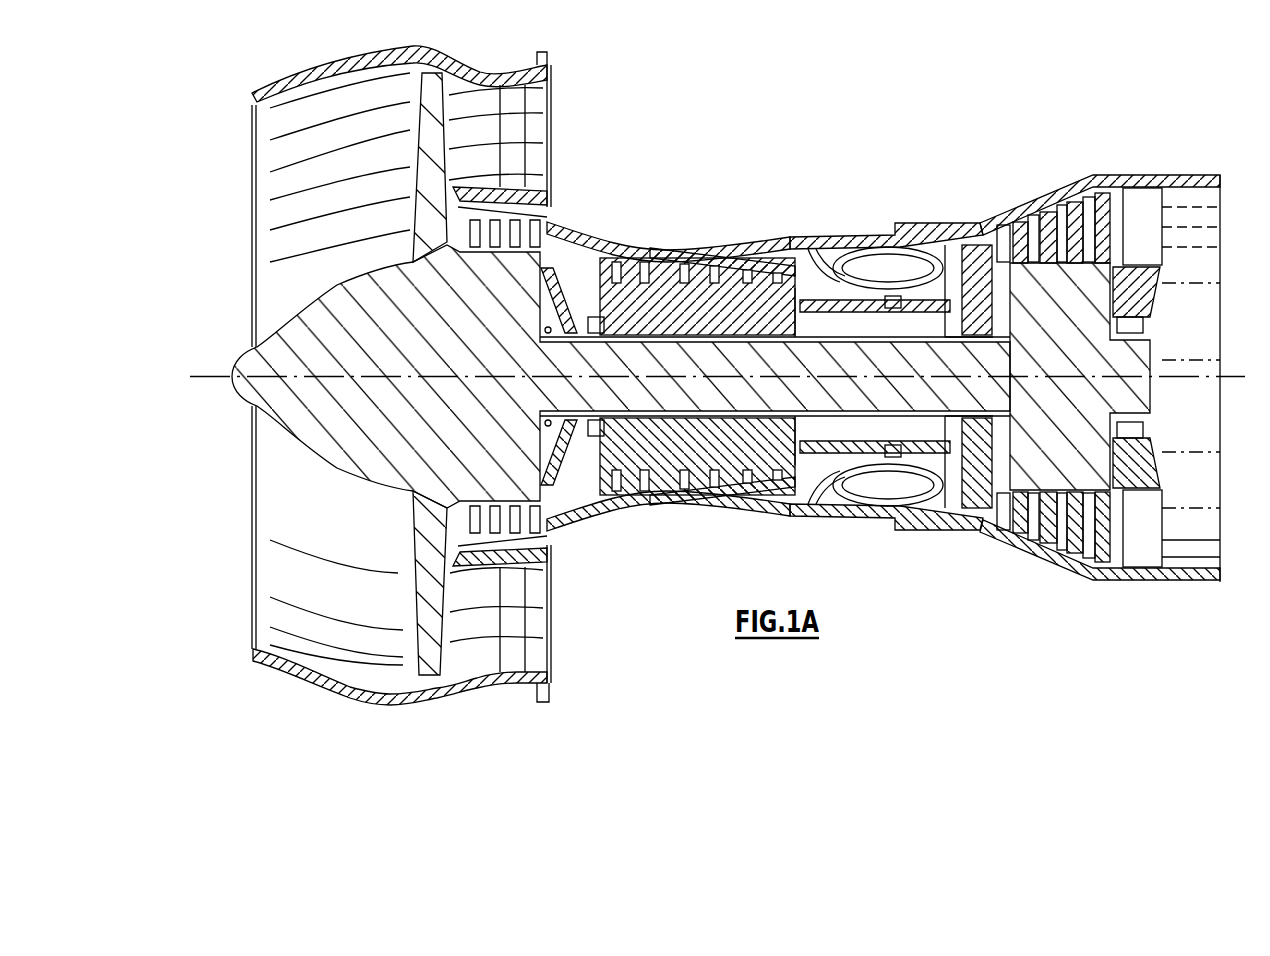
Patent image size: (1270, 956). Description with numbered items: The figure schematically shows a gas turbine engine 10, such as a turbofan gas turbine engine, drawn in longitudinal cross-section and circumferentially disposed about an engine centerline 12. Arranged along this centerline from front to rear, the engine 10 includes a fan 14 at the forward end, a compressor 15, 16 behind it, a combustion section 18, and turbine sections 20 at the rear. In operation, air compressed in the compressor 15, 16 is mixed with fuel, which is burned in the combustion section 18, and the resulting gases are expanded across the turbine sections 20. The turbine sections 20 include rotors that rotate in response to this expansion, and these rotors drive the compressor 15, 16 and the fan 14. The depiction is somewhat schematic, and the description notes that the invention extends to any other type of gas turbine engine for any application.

The gas turbine engine 10 is at (588, 100).
The engine centerline 12 is at (199, 373).
The fan 14 is at (413, 153).
The compressor 15 is at (552, 714).
The compressor 16 is at (788, 203).
The combustion section 18 is at (796, 203).
The turbine sections 20 is at (1172, 139).